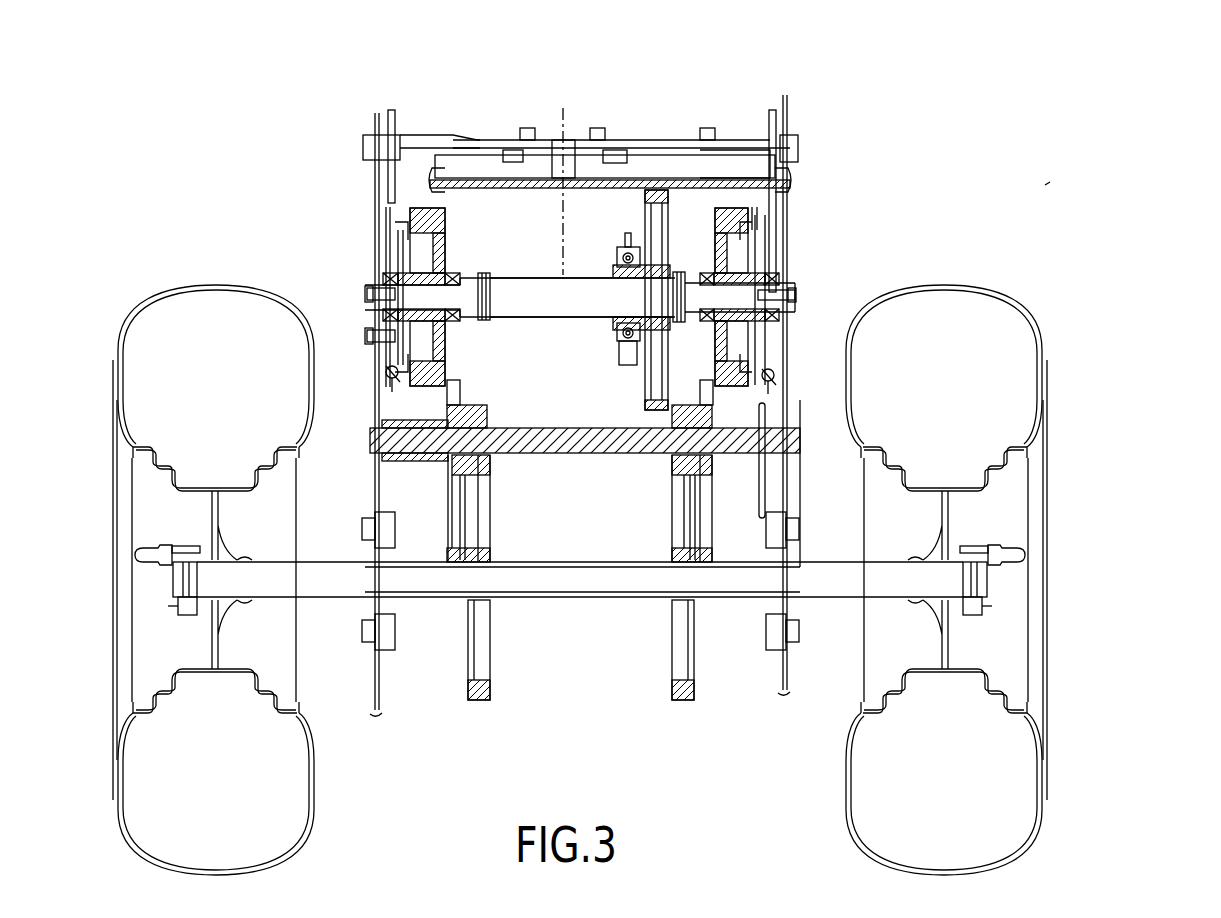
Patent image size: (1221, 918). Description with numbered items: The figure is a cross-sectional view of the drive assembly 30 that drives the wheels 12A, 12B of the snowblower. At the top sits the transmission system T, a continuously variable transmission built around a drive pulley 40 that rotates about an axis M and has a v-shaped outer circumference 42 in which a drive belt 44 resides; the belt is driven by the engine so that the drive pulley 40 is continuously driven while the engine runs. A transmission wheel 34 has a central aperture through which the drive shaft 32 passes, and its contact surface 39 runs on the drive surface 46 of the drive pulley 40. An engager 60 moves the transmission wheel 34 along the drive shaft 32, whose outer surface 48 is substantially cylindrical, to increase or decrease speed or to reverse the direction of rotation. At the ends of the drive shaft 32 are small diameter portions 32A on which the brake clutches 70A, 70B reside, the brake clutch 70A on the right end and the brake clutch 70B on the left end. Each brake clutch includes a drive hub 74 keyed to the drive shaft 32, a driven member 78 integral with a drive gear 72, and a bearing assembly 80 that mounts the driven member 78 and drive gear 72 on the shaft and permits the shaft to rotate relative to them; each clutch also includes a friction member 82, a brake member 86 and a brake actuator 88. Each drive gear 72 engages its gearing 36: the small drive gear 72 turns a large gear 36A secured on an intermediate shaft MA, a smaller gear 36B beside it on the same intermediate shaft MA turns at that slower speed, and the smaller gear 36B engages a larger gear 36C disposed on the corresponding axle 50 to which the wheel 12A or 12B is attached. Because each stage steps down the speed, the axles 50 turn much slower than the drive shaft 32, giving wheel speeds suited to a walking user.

The drive assembly 30 is at (1053, 181).
The wheel 12A is at (1025, 300).
The wheel 12B is at (128, 306).
The axle 50 is at (338, 608).
The intermediate shaft MA is at (378, 465).
The drive pulley 40 is at (473, 175).
The v-shaped outer circumference 42 is at (430, 185).
The drive belt 44 is at (700, 185).
The transmission system T is at (478, 110).
The axis M is at (563, 112).
The drive shaft 32 is at (575, 306).
The small diameter portion 32A is at (478, 302).
The outer surface 48 is at (548, 318).
The drive surface 46 is at (606, 198).
The transmission wheel 34 is at (645, 385).
The engager 60 is at (615, 350).
The contact surface 39 is at (645, 412).
The brake clutch 70A is at (815, 253).
The brake clutch 70B is at (352, 245).
The drive gear 72 is at (458, 262).
The driven member 78 is at (443, 210).
The drive hub 74 is at (390, 335).
The brake member 86 is at (392, 222).
The bearing assembly 80 is at (392, 296).
The brake actuator 88 is at (388, 375).
The friction member 82 is at (418, 205).
The gearing 36 is at (522, 547).
The large gear 36A is at (447, 542).
The smaller gear 36B is at (488, 470).
The larger gear 36C is at (484, 700).